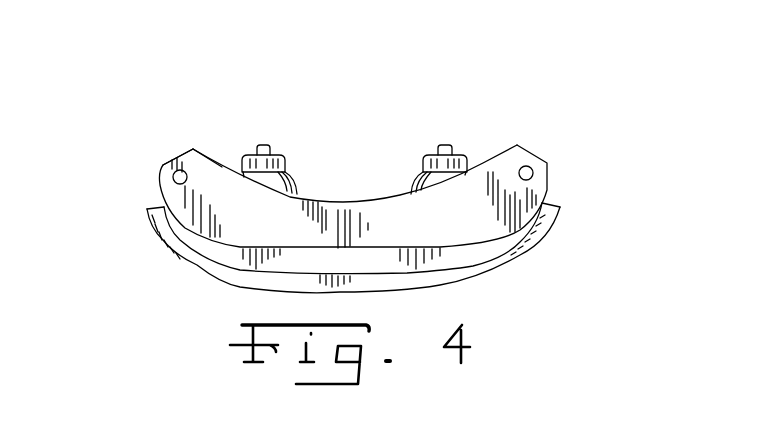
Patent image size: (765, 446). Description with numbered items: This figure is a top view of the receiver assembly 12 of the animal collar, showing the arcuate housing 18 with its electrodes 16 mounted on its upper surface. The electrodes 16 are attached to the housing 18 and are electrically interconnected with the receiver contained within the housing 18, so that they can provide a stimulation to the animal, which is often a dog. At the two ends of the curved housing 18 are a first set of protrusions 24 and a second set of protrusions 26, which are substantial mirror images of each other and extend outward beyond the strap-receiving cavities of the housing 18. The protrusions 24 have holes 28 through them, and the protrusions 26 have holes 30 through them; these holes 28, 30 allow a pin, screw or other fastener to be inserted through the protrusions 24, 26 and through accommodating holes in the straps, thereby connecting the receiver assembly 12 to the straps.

The receiver assembly 12 is at (570, 223).
The electrodes 16 is at (437, 147).
The arcuate housing 18 is at (167, 252).
The first set of protrusions 24 is at (530, 148).
The second set of protrusions 26 is at (178, 156).
The holes 28 is at (533, 173).
The holes 30 is at (173, 176).